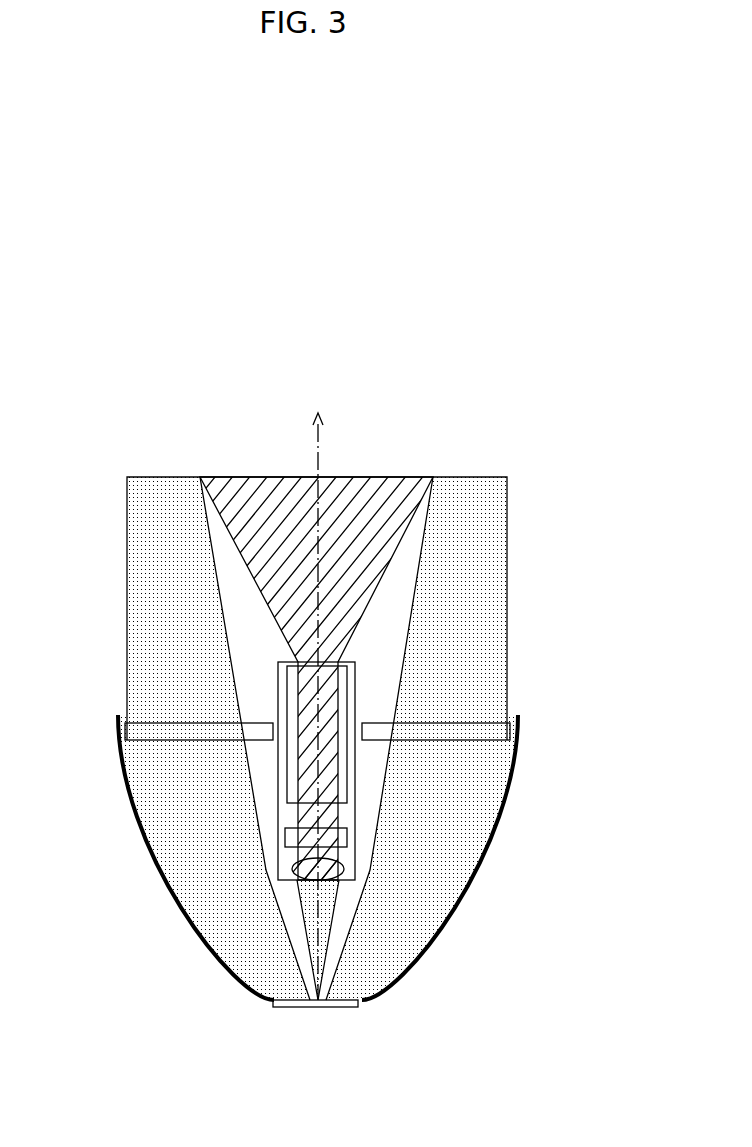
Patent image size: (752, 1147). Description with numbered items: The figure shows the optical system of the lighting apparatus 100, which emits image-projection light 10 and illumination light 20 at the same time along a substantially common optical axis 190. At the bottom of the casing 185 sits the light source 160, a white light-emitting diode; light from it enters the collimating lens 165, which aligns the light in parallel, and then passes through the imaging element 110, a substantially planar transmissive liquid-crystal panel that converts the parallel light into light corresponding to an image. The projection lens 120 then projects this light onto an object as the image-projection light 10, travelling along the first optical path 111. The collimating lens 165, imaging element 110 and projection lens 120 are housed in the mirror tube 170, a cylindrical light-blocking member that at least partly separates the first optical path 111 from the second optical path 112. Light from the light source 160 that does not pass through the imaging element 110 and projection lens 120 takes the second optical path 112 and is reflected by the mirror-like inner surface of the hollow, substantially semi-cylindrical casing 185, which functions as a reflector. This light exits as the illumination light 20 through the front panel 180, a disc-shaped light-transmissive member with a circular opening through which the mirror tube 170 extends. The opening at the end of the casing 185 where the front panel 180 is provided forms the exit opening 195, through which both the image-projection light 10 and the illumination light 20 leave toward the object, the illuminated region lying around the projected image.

The lighting apparatus 100 is at (540, 407).
The image-projection light 10 is at (397, 487).
The illumination light 20 is at (477, 537).
The imaging element 110 is at (350, 835).
The first optical path 111 is at (297, 817).
The second optical path 112 is at (467, 848).
The projection lens 120 is at (352, 688).
The light source 160 is at (282, 1005).
The collimating lens 165 is at (346, 876).
The mirror tube 170 is at (355, 813).
The front panel 180 is at (477, 730).
The casing 185 is at (138, 837).
The optical axis 190 is at (320, 452).
The exit opening 195 is at (170, 712).